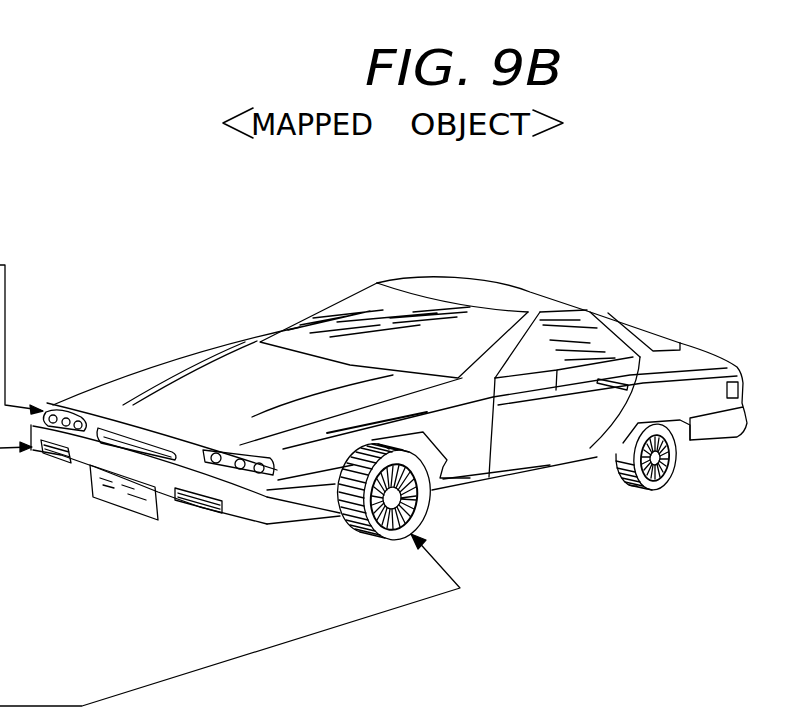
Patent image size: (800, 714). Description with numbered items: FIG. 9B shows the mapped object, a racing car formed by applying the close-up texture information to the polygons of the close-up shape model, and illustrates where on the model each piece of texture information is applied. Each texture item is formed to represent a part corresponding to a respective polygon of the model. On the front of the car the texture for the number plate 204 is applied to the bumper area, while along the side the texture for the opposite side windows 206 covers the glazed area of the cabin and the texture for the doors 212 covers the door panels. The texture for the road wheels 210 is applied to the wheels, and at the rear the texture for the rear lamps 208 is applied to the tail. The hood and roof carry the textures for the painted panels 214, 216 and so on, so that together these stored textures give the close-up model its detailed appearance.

The number plate 204 is at (137, 517).
The opposite side windows 206 is at (573, 343).
The rear lamps 208 is at (747, 380).
The road wheels 210 is at (410, 508).
The doors 212 is at (562, 477).
The painted panels 214 is at (237, 390).
The painted panels 216 is at (470, 293).